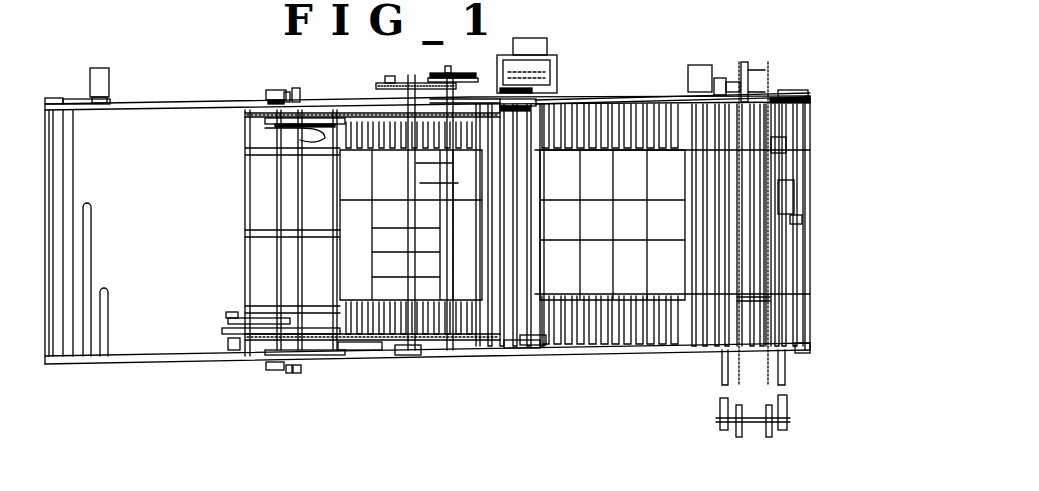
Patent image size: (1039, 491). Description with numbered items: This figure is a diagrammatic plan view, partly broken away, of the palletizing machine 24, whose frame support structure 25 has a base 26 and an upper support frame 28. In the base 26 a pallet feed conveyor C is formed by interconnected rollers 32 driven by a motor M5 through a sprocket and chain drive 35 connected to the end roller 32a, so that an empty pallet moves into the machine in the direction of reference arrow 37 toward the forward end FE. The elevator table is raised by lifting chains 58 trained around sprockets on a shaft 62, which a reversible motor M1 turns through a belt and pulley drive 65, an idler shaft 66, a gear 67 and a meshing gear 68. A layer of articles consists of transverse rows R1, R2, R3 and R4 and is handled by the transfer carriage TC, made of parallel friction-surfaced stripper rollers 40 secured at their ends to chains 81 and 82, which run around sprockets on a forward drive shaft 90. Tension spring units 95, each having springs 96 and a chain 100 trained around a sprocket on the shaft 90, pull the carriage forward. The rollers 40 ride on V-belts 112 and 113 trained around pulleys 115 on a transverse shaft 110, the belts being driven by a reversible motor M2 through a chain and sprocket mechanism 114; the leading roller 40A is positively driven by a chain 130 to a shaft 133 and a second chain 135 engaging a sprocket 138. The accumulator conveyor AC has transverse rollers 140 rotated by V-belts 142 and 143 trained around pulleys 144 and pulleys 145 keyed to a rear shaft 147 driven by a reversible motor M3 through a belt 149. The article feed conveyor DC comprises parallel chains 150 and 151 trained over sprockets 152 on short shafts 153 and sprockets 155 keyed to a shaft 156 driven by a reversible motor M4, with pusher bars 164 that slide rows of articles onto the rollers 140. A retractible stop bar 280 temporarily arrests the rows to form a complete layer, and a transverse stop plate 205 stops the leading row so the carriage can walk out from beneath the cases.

The machine 24 is at (202, 85).
The frame support structure 25 is at (150, 368).
The base 26 is at (212, 104).
The upper support frame 28 is at (650, 100).
The rollers 32 is at (108, 298).
The end roller 32a is at (53, 138).
The sprocket and chain drive 35 is at (72, 100).
The reference arrow 37 is at (218, 228).
The stripper rollers 40 is at (515, 142).
The leading roller 40A is at (470, 290).
The lifting chain 58 is at (408, 356).
The shaft 62 is at (416, 163).
The belt and pulley drive 65 is at (477, 78).
The idler shaft 66 is at (420, 183).
The gear 67 is at (446, 74).
The gear 68 is at (386, 84).
The chain 81 is at (328, 116).
The chain 82 is at (346, 360).
The forward transverse rotary drive shaft 90 is at (302, 272).
The tension spring units 95 is at (270, 92).
The springs 96 is at (288, 92).
The chain 100 is at (300, 90).
The transverse shaft 110 is at (280, 170).
The V-belt 112 is at (268, 129).
The V-belt 113 is at (366, 350).
The chain and sprocket mechanism 114 is at (528, 90).
The pulley 115 is at (268, 121).
The chain 130 is at (230, 320).
The shaft 133 is at (228, 344).
The second chain 135 is at (224, 331).
The sprocket 138 is at (482, 330).
The transverse rollers 140 is at (552, 110).
The V-belt 142 is at (612, 104).
The V-belt 143 is at (532, 346).
The pulley 144 is at (505, 104).
The pulley 145 is at (784, 104).
The transverse shaft 147 is at (800, 246).
The belt 149 is at (790, 220).
The chain 150 is at (740, 252).
The chain 151 is at (768, 258).
The sprocket 152 is at (742, 434).
The short shaft 153 is at (750, 440).
The sprocket 155 is at (750, 70).
The shaft 156 is at (724, 78).
The pusher bars 164 is at (755, 296).
The transverse stop plate 205 is at (345, 178).
The retractible stop bar 280 is at (544, 285).
The accumulator conveyor AC is at (634, 100).
The pallet feed conveyor C is at (64, 246).
The article feed conveyor DC is at (730, 372).
The forward end FE is at (246, 244).
The reversible motor M1 is at (528, 40).
The reversible motor M2 is at (538, 66).
The reversible motor M3 is at (782, 196).
The reversible motor M4 is at (694, 66).
The motor M5 is at (100, 80).
The transverse row R1 is at (356, 218).
The transverse row R2 is at (392, 218).
The transverse row R3 is at (422, 241).
The transverse row R4 is at (465, 265).
The transfer carriage TC is at (494, 220).